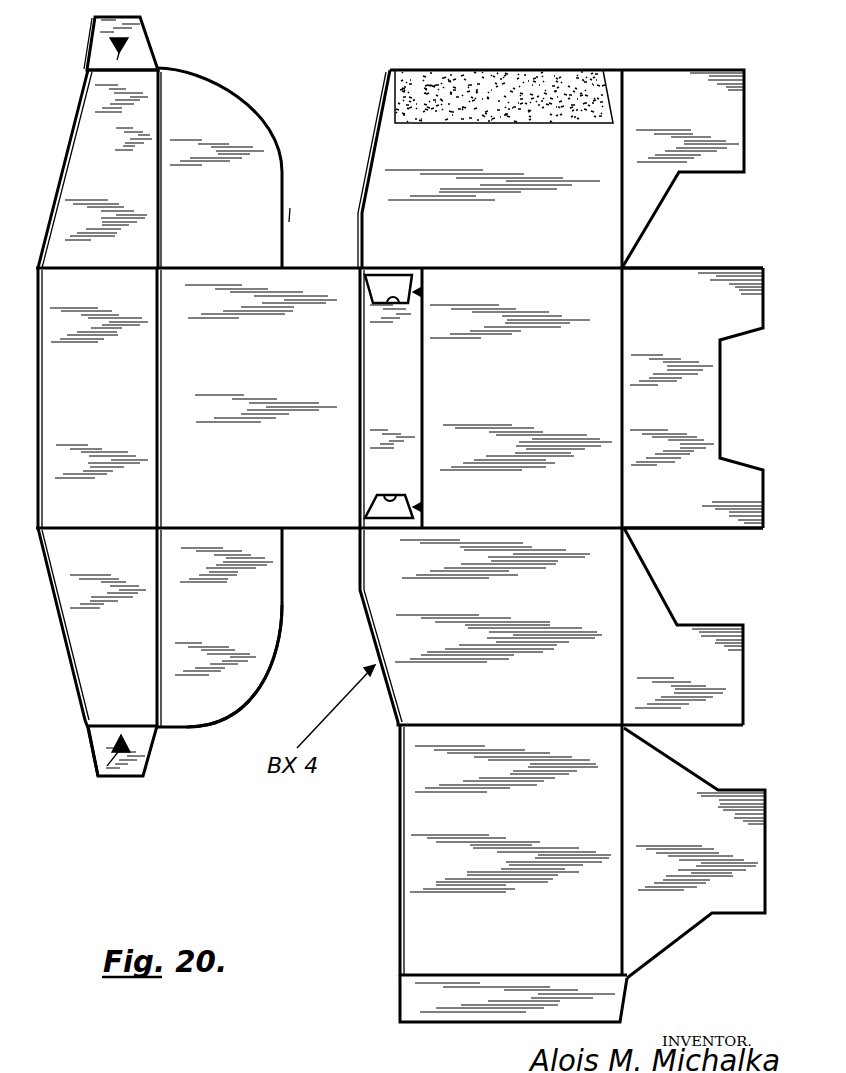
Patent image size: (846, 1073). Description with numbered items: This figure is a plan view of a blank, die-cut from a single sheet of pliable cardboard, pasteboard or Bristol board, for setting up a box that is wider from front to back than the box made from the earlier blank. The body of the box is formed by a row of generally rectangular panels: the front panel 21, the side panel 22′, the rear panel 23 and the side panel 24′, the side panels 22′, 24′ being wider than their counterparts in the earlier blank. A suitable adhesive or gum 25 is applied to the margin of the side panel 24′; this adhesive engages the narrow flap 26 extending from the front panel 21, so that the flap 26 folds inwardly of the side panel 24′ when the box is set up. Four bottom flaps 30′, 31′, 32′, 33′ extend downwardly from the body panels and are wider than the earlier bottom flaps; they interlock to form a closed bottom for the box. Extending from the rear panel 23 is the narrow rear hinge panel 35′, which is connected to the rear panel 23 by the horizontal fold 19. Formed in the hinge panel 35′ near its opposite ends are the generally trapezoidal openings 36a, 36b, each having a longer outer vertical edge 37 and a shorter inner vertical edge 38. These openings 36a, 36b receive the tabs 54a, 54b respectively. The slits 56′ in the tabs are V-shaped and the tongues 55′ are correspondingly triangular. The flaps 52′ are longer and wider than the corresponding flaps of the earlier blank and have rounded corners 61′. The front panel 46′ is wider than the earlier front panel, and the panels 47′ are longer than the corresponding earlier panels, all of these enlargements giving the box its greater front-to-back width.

The blank 19 is at (430, 425).
The front panel 21 is at (612, 788).
The side panel 22′ is at (610, 590).
The rear panel 23 is at (606, 489).
The side panel 24′ is at (600, 228).
The adhesive 25 is at (518, 77).
The flap 26 is at (425, 1012).
The bottom flap 30′ is at (667, 928).
The bottom flap 31′ is at (720, 715).
The bottom flap 32′ is at (702, 410).
The bottom flap 33′ is at (728, 160).
The rear hinge panel 35′ is at (426, 376).
The opening 36a is at (420, 507).
The opening 36b is at (420, 292).
The outer vertical edge 37 is at (402, 277).
The inner vertical edge 38 is at (397, 296).
The front panel 46′ is at (53, 393).
The panel 47′ is at (90, 640).
The flap 52′ is at (258, 637).
The tab 54a is at (140, 753).
The tab 54b is at (140, 54).
The tongue 55′ is at (130, 46).
The slit 56′ is at (113, 44).
The rounded corner 61′ is at (235, 705).